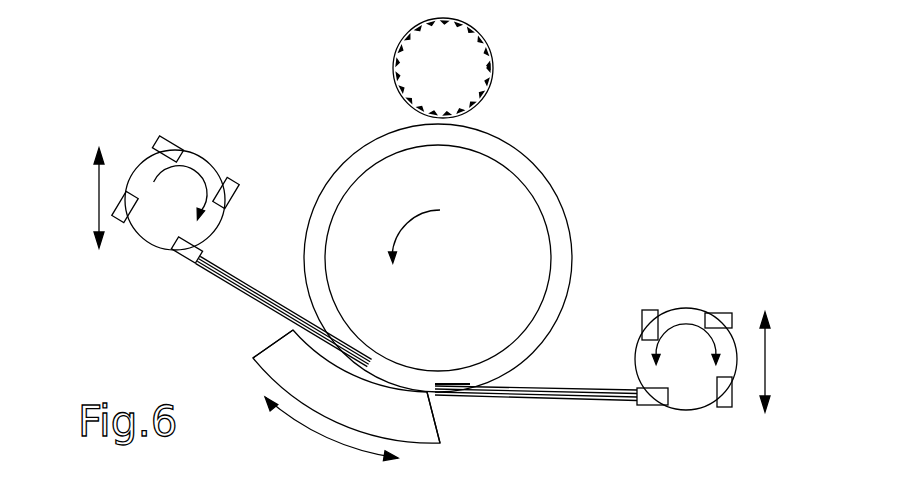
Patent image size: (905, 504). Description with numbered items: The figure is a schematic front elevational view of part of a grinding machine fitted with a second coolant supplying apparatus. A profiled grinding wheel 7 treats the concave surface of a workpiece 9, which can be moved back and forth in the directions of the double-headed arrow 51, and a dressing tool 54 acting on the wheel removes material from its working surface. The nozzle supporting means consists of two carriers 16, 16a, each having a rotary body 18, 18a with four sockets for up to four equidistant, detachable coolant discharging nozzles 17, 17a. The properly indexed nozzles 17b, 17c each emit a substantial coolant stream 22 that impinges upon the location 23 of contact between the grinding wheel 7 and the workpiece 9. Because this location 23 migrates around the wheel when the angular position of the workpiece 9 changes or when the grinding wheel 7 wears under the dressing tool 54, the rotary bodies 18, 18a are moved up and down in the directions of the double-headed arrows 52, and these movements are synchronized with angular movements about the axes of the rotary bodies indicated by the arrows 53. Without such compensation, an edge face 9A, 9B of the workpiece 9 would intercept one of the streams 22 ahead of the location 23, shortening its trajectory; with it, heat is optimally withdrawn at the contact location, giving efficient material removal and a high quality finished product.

The profiled grinding wheel 7 is at (508, 192).
The workpiece 9 is at (376, 367).
The edge face of workpiece 9A is at (437, 408).
The edge face of workpiece 9B is at (267, 347).
The carrier 16 is at (707, 352).
The carrier 16a is at (164, 185).
The coolant discharging nozzles 17 is at (727, 385).
The coolant discharging nozzles 17a is at (128, 200).
The nozzle 17b is at (655, 400).
The nozzle 17c is at (187, 258).
The rotary body 18 is at (672, 320).
The rotary body 18a is at (157, 225).
The coolant stream 22 is at (252, 288).
The location of contact 23 is at (460, 406).
The double-headed arrow 51 is at (318, 438).
The double-headed arrows 52 is at (97, 197).
The arrows 53 is at (192, 173).
The dressing tool 54 is at (460, 77).